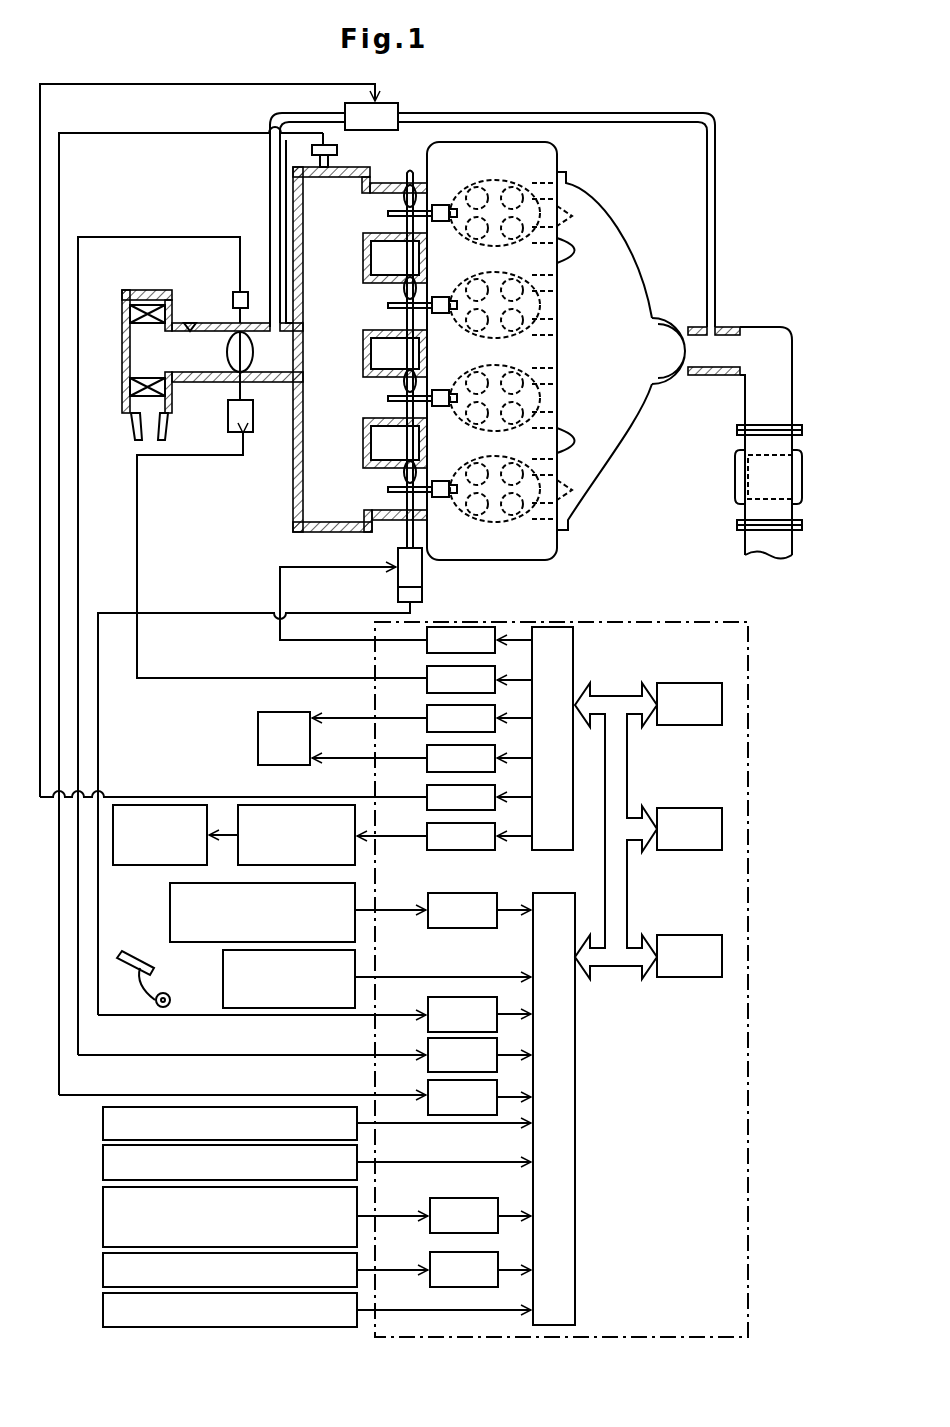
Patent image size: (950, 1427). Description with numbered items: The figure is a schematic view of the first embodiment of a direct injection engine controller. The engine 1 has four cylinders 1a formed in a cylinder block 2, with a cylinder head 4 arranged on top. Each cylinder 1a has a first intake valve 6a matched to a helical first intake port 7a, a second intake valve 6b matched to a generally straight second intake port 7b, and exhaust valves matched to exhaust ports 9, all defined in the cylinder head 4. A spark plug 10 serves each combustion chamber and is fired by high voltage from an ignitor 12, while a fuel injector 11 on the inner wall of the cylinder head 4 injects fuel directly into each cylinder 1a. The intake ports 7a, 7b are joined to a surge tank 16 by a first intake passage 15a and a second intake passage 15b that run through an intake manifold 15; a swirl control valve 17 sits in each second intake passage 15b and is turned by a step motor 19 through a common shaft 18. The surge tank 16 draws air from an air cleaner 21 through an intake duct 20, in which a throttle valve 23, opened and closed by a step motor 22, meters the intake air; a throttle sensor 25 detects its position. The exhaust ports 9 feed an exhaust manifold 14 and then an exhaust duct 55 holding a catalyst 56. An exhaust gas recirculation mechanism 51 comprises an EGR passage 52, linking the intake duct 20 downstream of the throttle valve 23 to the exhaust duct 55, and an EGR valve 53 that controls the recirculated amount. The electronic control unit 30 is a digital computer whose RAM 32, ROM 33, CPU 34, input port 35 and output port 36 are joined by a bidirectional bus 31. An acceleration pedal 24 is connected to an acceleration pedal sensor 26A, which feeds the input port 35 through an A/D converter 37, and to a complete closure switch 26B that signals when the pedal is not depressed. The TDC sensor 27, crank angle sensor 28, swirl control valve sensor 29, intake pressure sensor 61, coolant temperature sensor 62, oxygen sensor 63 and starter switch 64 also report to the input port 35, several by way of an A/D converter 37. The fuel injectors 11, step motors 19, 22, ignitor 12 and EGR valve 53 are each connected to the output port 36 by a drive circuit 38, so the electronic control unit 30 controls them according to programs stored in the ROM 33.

The engine 1 is at (525, 362).
The cylinder 1a is at (562, 163).
The cylinder block 2 is at (525, 362).
The cylinder head 4 is at (556, 560).
The first intake valve 6a is at (470, 228).
The second intake valve 6b is at (575, 195).
The first intake port 7a is at (475, 575).
The second intake port 7b is at (494, 186).
The exhaust port 9 is at (577, 356).
The spark plug 10 is at (185, 805).
The fuel injector 11 is at (440, 200).
The ignitor 12 is at (322, 805).
The exhaust manifold 14 is at (648, 392).
The intake manifold 15 is at (376, 183).
The first intake passage 15a is at (382, 226).
The second intake passage 15b is at (378, 197).
The surge tank 16 is at (272, 200).
The swirl control valve 17 is at (412, 185).
The shaft 18 is at (366, 352).
The step motor 19 is at (398, 578).
The intake duct 20 is at (210, 323).
The air cleaner 21 is at (122, 405).
The step motor 22 is at (228, 418).
The throttle valve 23 is at (253, 352).
The acceleration pedal 24 is at (120, 965).
The throttle sensor 25 is at (236, 292).
The acceleration pedal sensor 26A is at (170, 898).
The complete closure switch 26B is at (223, 980).
The TDC sensor 27 is at (103, 1125).
The crank angle sensor 28 is at (103, 1162).
The swirl control valve sensor 29 is at (422, 596).
The electronic control unit 30 is at (668, 618).
The bidirectional bus 31 is at (612, 695).
The random access memory 32 is at (698, 683).
The read only memory 33 is at (700, 808).
The central processing unit 34 is at (704, 935).
The input port 35 is at (577, 1258).
The output port 36 is at (573, 637).
The A/D converter 37 is at (428, 888).
The drive circuit 38 is at (424, 632).
The exhaust gas recirculation mechanism 51 is at (505, 108).
The EGR passage 52 is at (658, 112).
The EGR valve 53 is at (392, 100).
The exhaust duct 55 is at (794, 345).
The catalyst 56 is at (737, 475).
The intake pressure sensor 61 is at (312, 150).
The coolant temperature sensor 62 is at (103, 1216).
The oxygen sensor 63 is at (103, 1270).
The starter switch 64 is at (103, 1310).